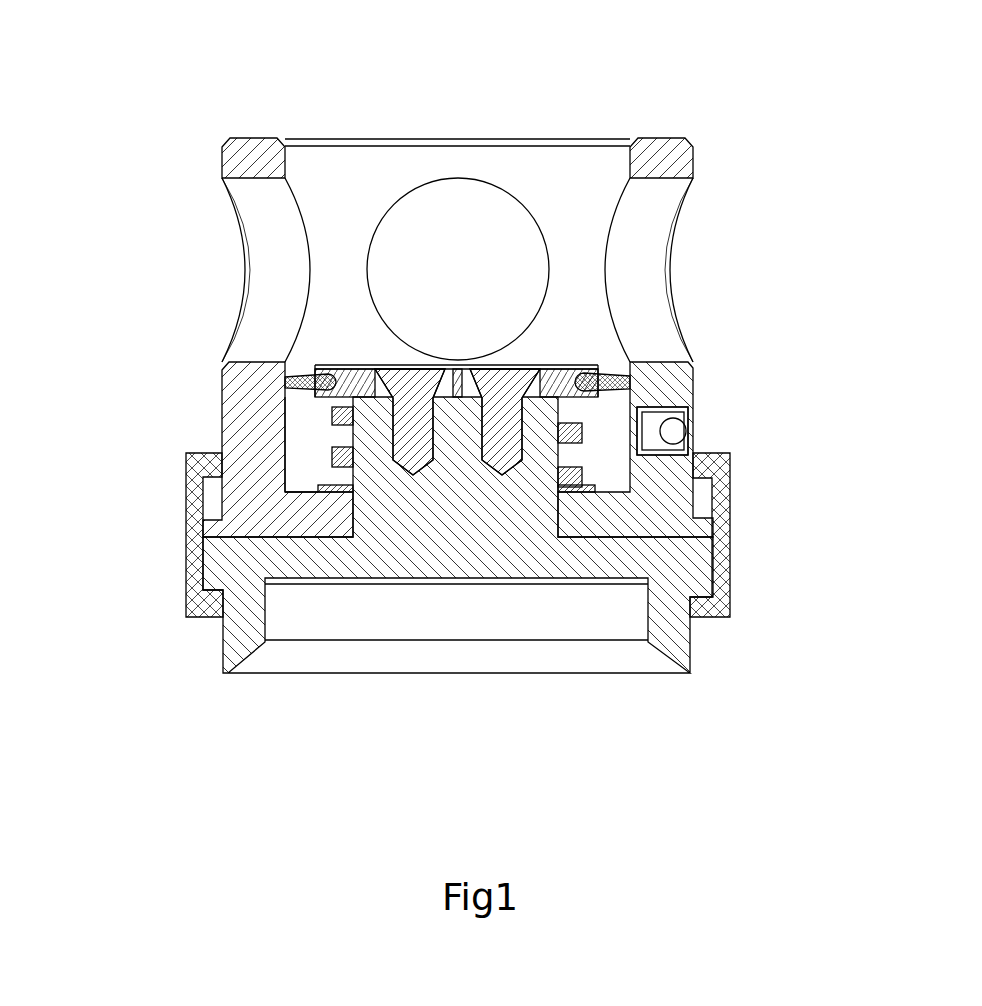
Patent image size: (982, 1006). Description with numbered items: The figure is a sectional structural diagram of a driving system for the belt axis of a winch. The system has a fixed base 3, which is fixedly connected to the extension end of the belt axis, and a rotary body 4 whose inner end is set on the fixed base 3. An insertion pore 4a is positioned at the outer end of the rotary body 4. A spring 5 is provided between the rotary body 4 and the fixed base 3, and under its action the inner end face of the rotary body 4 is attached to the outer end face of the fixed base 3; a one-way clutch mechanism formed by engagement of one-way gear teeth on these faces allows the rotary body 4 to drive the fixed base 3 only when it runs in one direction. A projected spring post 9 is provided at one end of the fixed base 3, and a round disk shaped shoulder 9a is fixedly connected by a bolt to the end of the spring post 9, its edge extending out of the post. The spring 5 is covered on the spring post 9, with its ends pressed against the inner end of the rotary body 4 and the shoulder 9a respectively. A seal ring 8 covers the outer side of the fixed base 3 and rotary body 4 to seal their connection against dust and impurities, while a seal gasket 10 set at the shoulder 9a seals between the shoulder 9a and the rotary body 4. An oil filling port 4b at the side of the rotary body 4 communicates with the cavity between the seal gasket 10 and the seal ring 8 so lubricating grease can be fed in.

The fixed base 3 is at (233, 573).
The rotary body 4 is at (278, 313).
The insertion pore 4a is at (442, 197).
The oil filling port 4b is at (690, 420).
The spring 5 is at (583, 438).
The seal ring 8 is at (720, 543).
The spring post 9 is at (500, 415).
The shoulder 9a is at (561, 375).
The seal gasket 10 is at (607, 380).